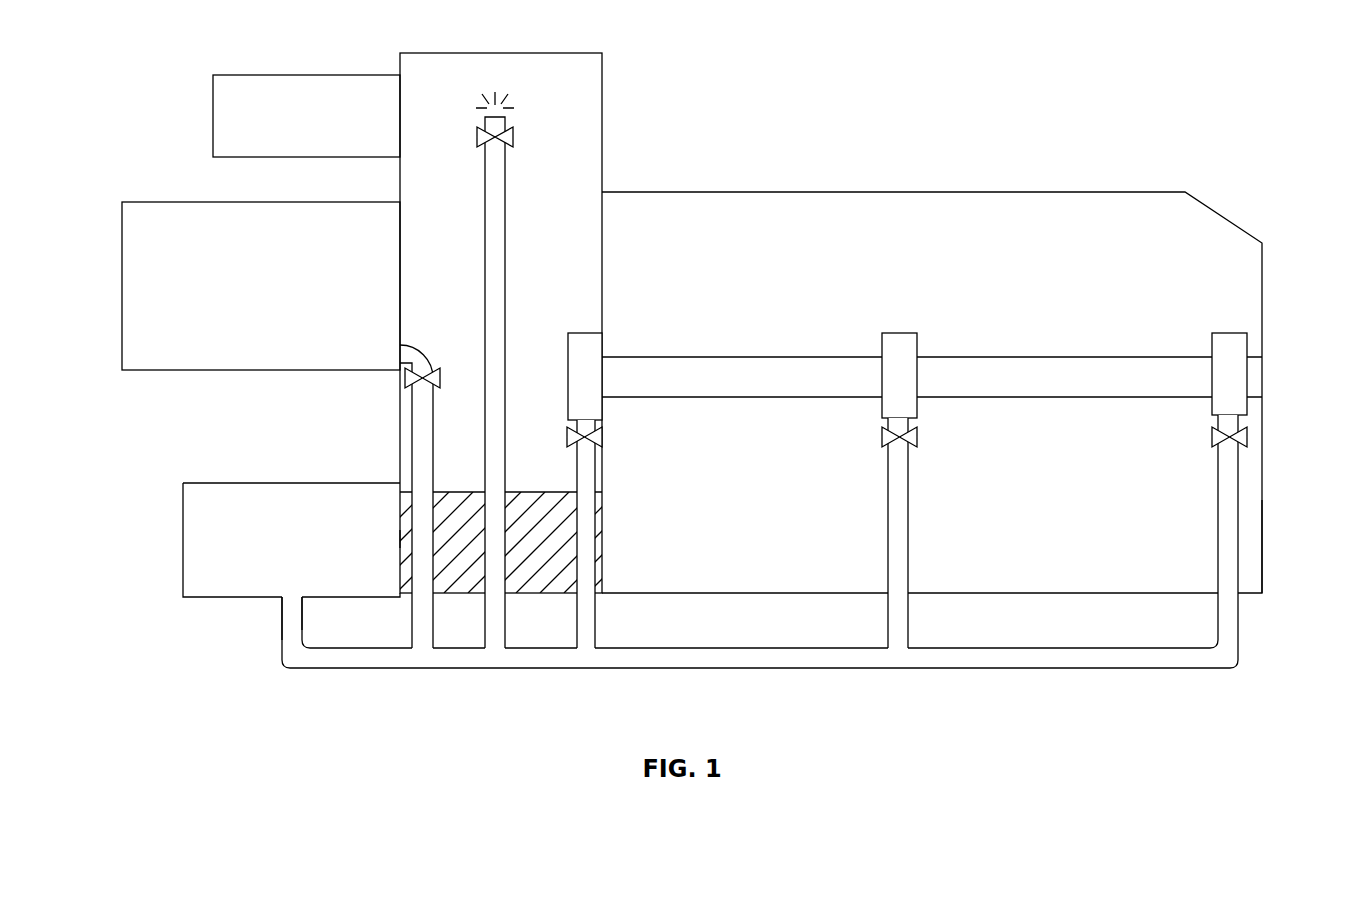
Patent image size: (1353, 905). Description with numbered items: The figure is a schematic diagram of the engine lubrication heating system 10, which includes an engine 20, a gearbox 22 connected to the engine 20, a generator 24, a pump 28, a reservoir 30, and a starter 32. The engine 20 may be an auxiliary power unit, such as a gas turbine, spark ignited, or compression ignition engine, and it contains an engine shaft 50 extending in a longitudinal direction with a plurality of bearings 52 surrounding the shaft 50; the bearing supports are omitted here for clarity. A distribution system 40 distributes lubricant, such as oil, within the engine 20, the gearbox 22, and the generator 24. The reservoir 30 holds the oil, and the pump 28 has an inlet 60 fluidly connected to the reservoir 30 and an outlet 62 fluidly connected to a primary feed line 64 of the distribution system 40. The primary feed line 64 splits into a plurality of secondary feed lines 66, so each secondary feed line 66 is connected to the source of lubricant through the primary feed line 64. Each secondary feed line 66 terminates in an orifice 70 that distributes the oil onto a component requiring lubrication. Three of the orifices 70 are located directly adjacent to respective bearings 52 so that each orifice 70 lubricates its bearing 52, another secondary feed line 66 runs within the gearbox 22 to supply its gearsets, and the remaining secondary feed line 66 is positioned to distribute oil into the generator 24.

The engine lubrication heating system 10 is at (837, 308).
The engine 20 is at (1228, 222).
The gearbox 22 is at (556, 53).
The generator 24 is at (176, 202).
The pump 28 is at (213, 483).
The reservoir 30 is at (555, 540).
The starter 32 is at (255, 75).
The distribution system 40 is at (1263, 548).
The engine shaft 50 is at (1080, 362).
The bearings 52 is at (583, 342).
The inlet 60 is at (401, 538).
The outlet 62 is at (290, 600).
The primary feed line 64 is at (963, 655).
The secondary feed lines 66 is at (502, 243).
The orifice 70 is at (514, 128).